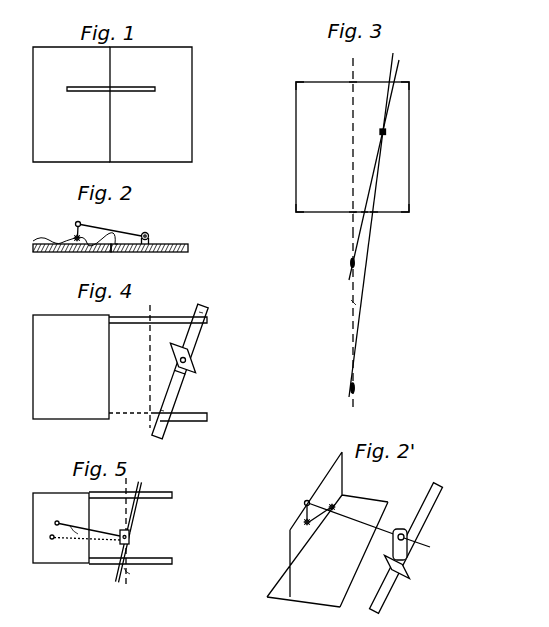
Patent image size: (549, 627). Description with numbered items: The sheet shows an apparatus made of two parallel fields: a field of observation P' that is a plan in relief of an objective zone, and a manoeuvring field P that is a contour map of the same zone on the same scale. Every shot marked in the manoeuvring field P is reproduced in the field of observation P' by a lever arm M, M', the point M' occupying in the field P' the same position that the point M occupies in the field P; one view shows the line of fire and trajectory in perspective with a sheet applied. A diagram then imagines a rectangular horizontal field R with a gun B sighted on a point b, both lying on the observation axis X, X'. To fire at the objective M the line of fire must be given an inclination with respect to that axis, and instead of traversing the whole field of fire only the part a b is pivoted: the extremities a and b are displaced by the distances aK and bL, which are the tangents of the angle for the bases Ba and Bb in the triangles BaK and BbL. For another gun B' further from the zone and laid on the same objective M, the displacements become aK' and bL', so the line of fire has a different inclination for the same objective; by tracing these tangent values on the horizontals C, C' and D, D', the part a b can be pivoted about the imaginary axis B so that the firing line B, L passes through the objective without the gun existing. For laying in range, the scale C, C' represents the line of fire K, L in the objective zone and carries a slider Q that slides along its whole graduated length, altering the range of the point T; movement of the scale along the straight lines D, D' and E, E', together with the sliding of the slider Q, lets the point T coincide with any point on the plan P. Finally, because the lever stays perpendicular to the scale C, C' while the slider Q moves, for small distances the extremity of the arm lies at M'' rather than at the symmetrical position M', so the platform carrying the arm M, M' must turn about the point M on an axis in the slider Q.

In FIG. 1, the manoeuvring field P is at (151, 104).
In FIG. 2, the manoeuvring field P is at (148, 256).
In FIG. 4, the manoeuvring field P is at (140, 366).
In FIG. 5, the manoeuvring field P is at (130, 531).
In FIG. 1, the field of observation P' is at (71, 104).
In FIG. 2, the field of observation P' is at (75, 251).
In FIG. 4, the field of observation P' is at (71, 367).
In FIG. 5, the field of observation P' is at (61, 528).
In FIG. 2', the field of observation P' is at (327, 529).
In FIG. 1, the point M of the lever arm M is at (136, 81).
In FIG. 2, the point M of the lever arm M is at (151, 233).
In FIG. 3, the point M of the lever arm M is at (388, 133).
In FIG. 5, the point M of the lever arm M is at (133, 528).
In FIG. 2', the point M of the lever arm M is at (406, 548).
In FIG. 1, the point M' of the lever arm M' is at (87, 81).
In FIG. 2, the point M' of the lever arm M' is at (108, 224).
In FIG. 5, the point M' of the lever arm M' is at (81, 544).
In FIG. 2', the point M' of the lever arm M' is at (346, 512).
In FIG. 5, the actual extremity of the arm M'' is at (85, 521).
In FIG. 3, the rectangular horizontal field R is at (352, 147).
In FIG. 3, the axis end X is at (357, 323).
In FIG. 3, the axis end X' is at (358, 136).
In FIG. 3, the point L is at (375, 170).
In FIG. 4, the point L is at (192, 332).
In FIG. 3, the point L' is at (371, 225).
In FIG. 3, the point C of the scale C is at (295, 79).
In FIG. 4, the point C of the scale C is at (159, 410).
In FIG. 5, the point C of the scale C is at (118, 562).
In FIG. 3, the point C' of the scale C' is at (411, 79).
In FIG. 4, the point C' of the scale C' is at (196, 319).
In FIG. 5, the point C' of the scale C' is at (135, 501).
In FIG. 3, the point D of guide line D is at (296, 215).
In FIG. 4, the point D of guide line D is at (133, 309).
In FIG. 3, the point D' of guide line D' is at (409, 215).
In FIG. 4, the point D' of guide line D' is at (165, 313).
In FIG. 4, the point E of guide line E is at (129, 424).
In FIG. 4, the point E' of guide line E' is at (186, 422).
In FIG. 3, the point K is at (361, 205).
In FIG. 4, the point K is at (168, 408).
In FIG. 3, the point K' is at (376, 205).
In FIG. 3, the gun B is at (346, 264).
In FIG. 3, the second gun B' is at (359, 382).
In FIG. 3, the point a is at (348, 219).
In FIG. 3, the point b is at (354, 75).
In FIG. 4, the slider Q is at (196, 364).
In FIG. 5, the slider Q is at (129, 541).
In FIG. 4, the point T is at (181, 359).